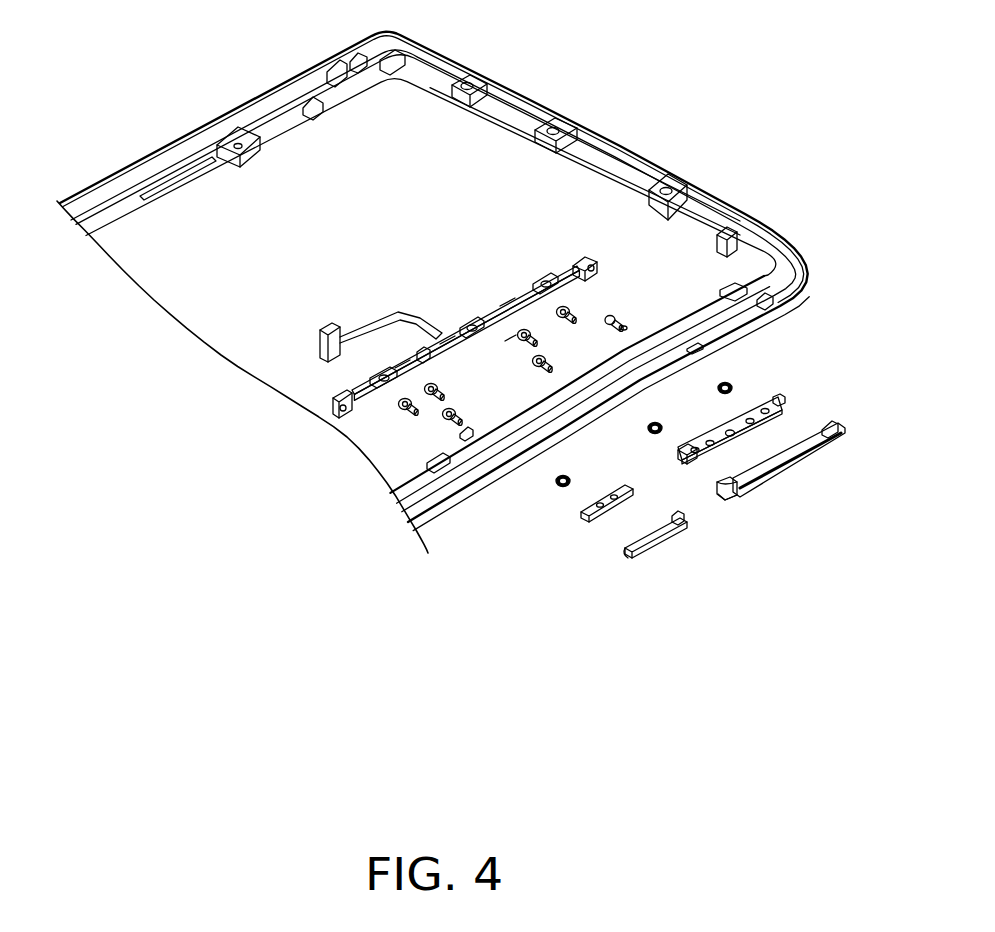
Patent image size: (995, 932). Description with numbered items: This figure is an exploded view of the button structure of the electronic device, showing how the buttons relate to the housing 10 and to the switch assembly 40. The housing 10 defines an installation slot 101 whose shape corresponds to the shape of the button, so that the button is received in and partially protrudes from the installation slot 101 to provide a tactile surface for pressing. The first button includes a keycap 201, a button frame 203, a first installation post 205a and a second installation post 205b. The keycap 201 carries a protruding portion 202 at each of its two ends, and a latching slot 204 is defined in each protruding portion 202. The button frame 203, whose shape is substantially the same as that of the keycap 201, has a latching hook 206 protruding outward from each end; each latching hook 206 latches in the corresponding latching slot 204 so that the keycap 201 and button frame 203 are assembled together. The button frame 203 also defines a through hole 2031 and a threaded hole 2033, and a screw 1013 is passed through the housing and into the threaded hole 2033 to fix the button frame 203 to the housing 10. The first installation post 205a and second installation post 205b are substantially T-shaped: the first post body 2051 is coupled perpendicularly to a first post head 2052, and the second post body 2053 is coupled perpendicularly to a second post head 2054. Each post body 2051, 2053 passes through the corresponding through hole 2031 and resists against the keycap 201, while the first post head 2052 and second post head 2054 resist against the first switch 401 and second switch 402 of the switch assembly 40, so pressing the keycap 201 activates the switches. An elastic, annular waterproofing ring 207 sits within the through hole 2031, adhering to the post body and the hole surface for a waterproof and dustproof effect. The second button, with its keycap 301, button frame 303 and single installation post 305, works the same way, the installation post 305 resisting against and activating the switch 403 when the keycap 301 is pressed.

The housing 10 is at (806, 272).
The installation slot 101 is at (748, 349).
The screw 1013 is at (510, 337).
The switch assembly 40 is at (300, 366).
The first switch 401 is at (565, 262).
The second switch 402 is at (483, 303).
The switch 403 is at (495, 340).
The first post body 2051 is at (624, 326).
The first post head 2052 is at (612, 318).
The first installation post 205a is at (830, 190).
The second post body 2053 is at (543, 375).
The second post head 2054 is at (523, 348).
The second installation post 205b is at (530, 603).
The installation post 305 is at (450, 423).
The button frame 303 is at (600, 517).
The keycap 301 is at (635, 552).
The waterproofing ring 207 is at (648, 428).
The button frame 203 is at (762, 392).
The through hole 2031 is at (693, 442).
The threaded hole 2033 is at (724, 420).
The keycap 201 is at (840, 425).
The protruding portion 202 is at (717, 483).
The latching slot 204 is at (725, 500).
The latching hook 206 is at (781, 403).